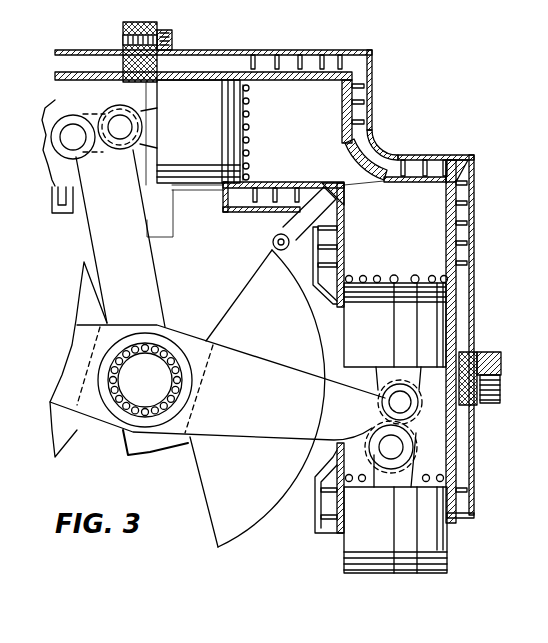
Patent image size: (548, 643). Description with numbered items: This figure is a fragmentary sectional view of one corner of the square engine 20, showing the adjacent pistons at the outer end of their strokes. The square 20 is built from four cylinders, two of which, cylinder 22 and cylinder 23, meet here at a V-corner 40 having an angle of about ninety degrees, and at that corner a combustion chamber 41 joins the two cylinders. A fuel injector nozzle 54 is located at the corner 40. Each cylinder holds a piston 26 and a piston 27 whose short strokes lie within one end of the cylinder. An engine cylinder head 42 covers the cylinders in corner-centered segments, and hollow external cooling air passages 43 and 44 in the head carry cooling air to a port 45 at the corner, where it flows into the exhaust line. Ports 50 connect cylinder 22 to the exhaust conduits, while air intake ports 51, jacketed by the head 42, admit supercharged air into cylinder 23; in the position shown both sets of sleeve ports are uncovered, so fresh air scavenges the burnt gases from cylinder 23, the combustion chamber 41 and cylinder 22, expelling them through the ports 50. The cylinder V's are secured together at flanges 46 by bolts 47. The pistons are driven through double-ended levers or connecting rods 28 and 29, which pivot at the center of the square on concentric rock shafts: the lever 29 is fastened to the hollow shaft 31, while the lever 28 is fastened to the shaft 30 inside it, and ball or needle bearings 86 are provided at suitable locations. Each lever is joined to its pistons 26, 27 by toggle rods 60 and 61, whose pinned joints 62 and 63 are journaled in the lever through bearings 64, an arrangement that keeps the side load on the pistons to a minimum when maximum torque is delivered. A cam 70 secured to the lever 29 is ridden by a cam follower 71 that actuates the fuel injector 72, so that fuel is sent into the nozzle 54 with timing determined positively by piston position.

The square 20 is at (486, 142).
The cylinder 22 is at (301, 80).
The cylinder 23 is at (446, 232).
The piston 26 is at (203, 111).
The piston 27 is at (382, 548).
The lever or connecting rod 28 is at (142, 264).
The lever or connecting rod 29 is at (257, 363).
The rock shaft 30 is at (160, 381).
The hollow shaft 31 is at (190, 392).
The V-corner 40 is at (346, 186).
The combustion chamber 41 is at (366, 176).
The engine cylinder head 42 is at (372, 110).
The external cooling air passage 43 is at (80, 52).
The external cooling air passage 44 is at (470, 283).
The port 45 is at (374, 137).
The flange 46 is at (162, 30).
The bolt 47 is at (123, 38).
The port 50 is at (252, 125).
The air intake port 51 is at (418, 274).
The fuel injector nozzle 54 is at (342, 200).
The toggle rod 60 is at (150, 117).
The toggle rod 61 is at (63, 120).
The pinned joint 62 is at (74, 150).
The pinned joint 63 is at (121, 114).
The bearing 64 is at (97, 112).
The cam 70 is at (280, 311).
The cam follower 71 is at (272, 244).
The fuel injector 72 is at (288, 232).
The ball or needle bearing 86 is at (164, 396).